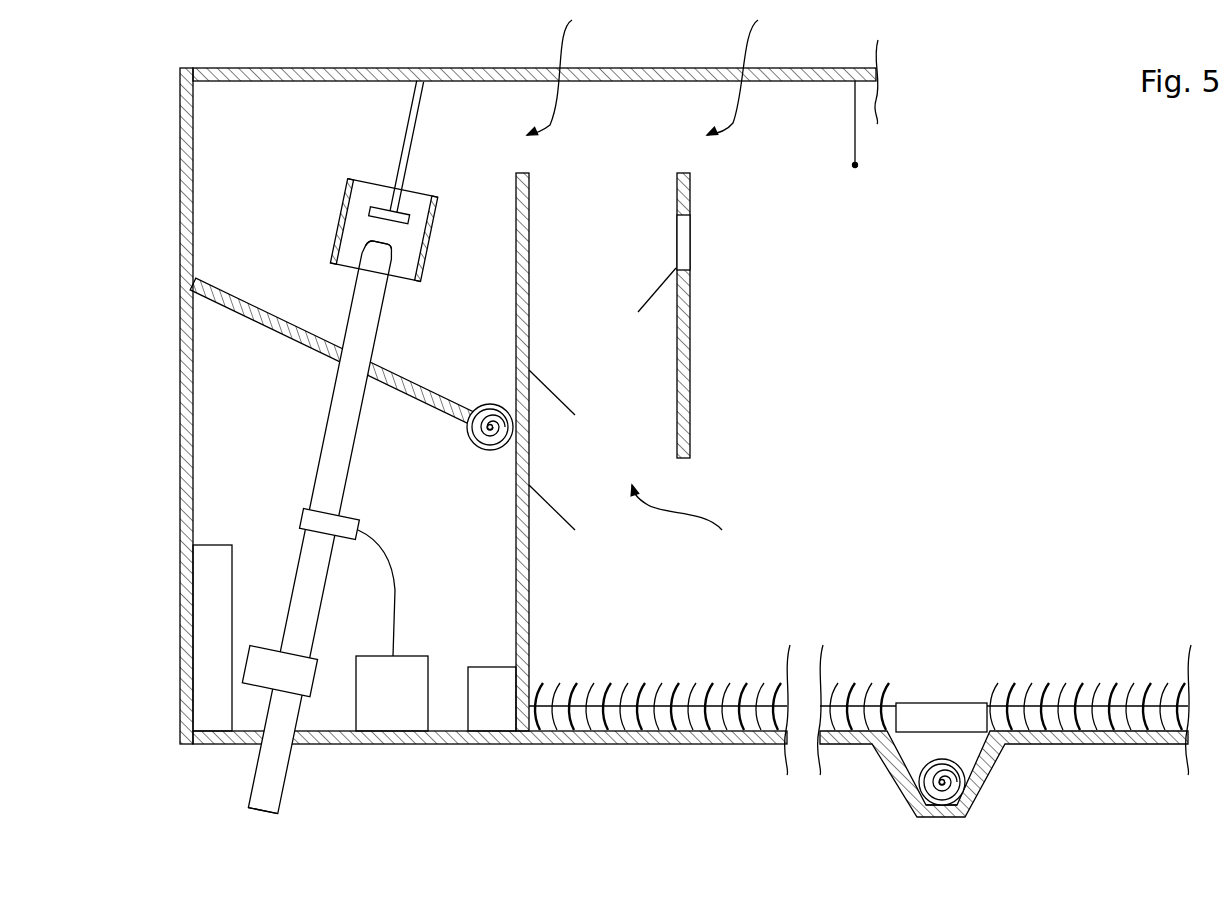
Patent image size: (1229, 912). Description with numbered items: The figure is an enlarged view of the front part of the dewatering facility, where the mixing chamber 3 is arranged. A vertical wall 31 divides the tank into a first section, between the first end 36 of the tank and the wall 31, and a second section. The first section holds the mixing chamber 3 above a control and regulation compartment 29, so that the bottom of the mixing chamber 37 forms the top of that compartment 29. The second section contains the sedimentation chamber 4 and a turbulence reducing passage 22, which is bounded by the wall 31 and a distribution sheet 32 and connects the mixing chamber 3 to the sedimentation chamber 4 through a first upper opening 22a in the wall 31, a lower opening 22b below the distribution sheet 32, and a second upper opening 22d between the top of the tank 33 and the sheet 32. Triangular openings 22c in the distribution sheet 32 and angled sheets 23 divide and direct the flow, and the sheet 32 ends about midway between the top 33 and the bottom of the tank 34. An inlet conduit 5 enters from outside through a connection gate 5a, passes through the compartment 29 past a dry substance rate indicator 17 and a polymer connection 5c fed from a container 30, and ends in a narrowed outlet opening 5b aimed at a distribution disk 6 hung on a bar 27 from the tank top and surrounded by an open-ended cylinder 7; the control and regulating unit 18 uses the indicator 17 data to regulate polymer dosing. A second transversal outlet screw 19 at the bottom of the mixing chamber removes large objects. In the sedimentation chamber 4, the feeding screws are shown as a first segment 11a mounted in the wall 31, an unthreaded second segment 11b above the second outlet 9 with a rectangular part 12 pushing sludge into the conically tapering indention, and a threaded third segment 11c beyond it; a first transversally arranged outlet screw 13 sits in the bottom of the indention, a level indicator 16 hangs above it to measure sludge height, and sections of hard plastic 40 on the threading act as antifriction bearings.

The mixing chamber 3 is at (258, 157).
The sedimentation chamber 4 is at (958, 378).
The inlet conduit 5 is at (260, 787).
The connection gate 5a is at (260, 812).
The outlet opening 5b is at (377, 240).
The connection 5c is at (312, 507).
The distribution disk 6 is at (428, 195).
The cylinder 7 is at (437, 232).
The second outlet 9 is at (953, 743).
The first segment of the feeding screws 11a is at (652, 697).
The second segment of the feeding screws 11b is at (923, 687).
The third segment of the feeding screws 11c is at (1070, 697).
The axially extending rectangular part 12 is at (920, 726).
The first transversally arranged outlet screw 13 is at (943, 790).
The level indicator 16 is at (857, 165).
The dry substance rate indicator 17 is at (263, 673).
The control and regulating unit 18 is at (208, 613).
The second transversal outlet screw 19 is at (489, 445).
The turbulence reducing passage 22 is at (614, 162).
The first upper opening 22a is at (575, 70).
The lower opening 22b is at (699, 518).
The triangular openings 22c is at (683, 242).
The second upper opening 22d is at (759, 70).
The angled sheets 23 is at (647, 300).
The bar 27 is at (402, 127).
The control and regulation compartment 29 is at (254, 397).
The container 30 is at (403, 710).
The vertical wall 31 is at (527, 548).
The distribution sheet 32 is at (692, 316).
The top of the tank 33 is at (643, 68).
The bottom of the tank 34 is at (592, 740).
The first end of the tank 36 is at (182, 92).
The bottom of the mixing chamber 37 is at (229, 315).
The hard plastic 40 is at (577, 677).